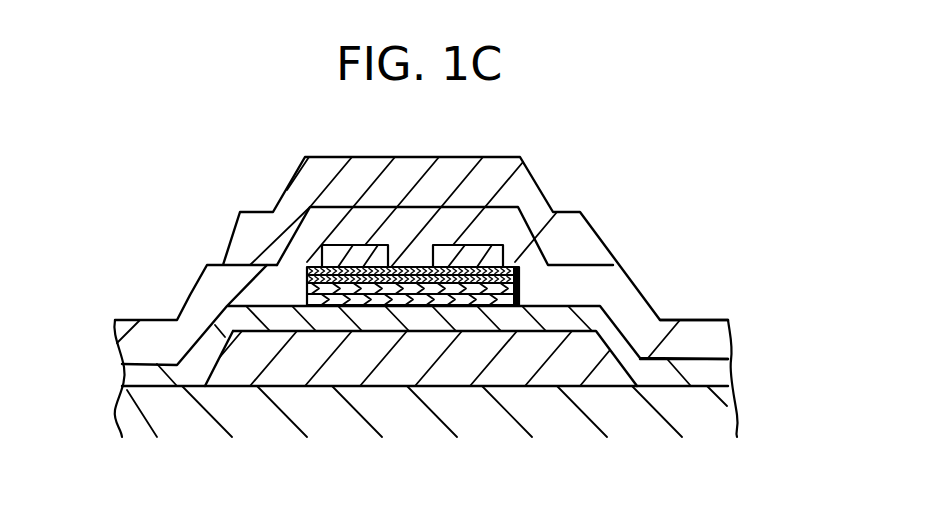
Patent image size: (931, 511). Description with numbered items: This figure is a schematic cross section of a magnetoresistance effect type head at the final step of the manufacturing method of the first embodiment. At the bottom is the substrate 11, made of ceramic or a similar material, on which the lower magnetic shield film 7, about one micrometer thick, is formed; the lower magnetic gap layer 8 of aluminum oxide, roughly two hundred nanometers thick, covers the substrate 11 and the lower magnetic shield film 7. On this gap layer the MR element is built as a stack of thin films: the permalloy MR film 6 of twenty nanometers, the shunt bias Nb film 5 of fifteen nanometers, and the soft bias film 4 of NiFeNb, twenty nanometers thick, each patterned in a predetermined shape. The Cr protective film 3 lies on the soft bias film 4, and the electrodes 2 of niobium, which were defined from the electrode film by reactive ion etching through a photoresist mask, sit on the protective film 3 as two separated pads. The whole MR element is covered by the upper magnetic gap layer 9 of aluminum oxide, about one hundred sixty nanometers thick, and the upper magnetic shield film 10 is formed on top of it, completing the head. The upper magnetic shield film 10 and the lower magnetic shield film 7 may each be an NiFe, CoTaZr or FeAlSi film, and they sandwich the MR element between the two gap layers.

The electrodes 2 is at (450, 256).
The Cr protective film 3 is at (518, 266).
The soft bias film 4 is at (520, 278).
The shunt bias Nb film 5 is at (520, 287).
The permalloy MR film 6 is at (520, 295).
The lower magnetic shield film 7 is at (599, 368).
The lower magnetic gap layer 8 is at (710, 377).
The upper magnetic gap layer 9 is at (689, 331).
The upper magnetic shield film 10 is at (507, 165).
The substrate 11 is at (710, 412).